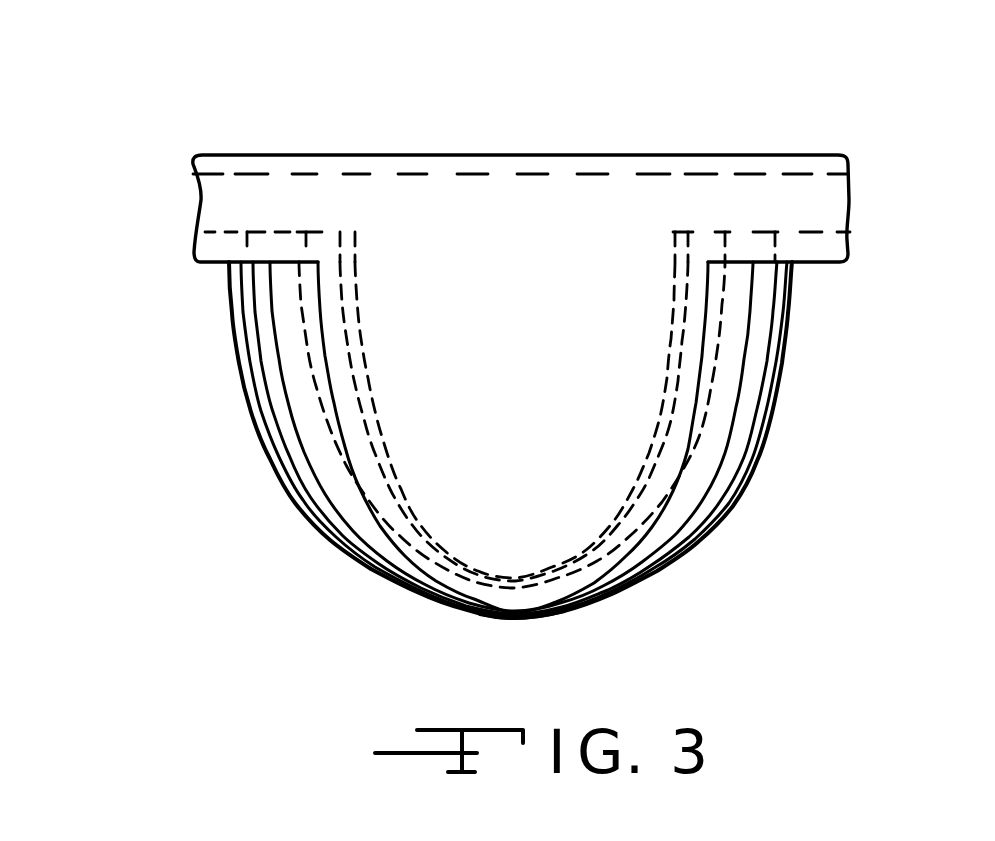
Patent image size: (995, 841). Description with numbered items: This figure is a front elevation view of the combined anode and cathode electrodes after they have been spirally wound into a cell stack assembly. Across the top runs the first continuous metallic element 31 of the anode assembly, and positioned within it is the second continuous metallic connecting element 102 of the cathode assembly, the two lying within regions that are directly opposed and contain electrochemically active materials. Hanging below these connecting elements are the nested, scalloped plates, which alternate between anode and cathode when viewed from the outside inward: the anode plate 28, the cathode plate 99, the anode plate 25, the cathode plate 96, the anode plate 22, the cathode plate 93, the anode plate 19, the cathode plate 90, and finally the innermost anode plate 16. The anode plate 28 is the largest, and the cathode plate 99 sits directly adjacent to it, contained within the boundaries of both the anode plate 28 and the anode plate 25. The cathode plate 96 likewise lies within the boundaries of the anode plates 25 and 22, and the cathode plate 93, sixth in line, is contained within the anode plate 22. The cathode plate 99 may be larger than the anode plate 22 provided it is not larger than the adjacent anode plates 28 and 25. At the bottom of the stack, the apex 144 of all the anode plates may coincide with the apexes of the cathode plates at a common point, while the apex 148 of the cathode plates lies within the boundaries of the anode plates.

The first continuous metallic element 31 is at (200, 155).
The second continuous metallic connecting element 102 is at (214, 172).
The cathode plate 96 is at (300, 275).
The cathode plate 93 is at (338, 292).
The anode plate 28 is at (230, 320).
The cathode plate 99 is at (268, 340).
The anode plate 25 is at (242, 388).
The anode plate 22 is at (282, 428).
The anode plate 19 is at (313, 447).
The cathode plate 90 is at (390, 460).
The anode plate 16 is at (500, 577).
The apex of the cathode plates 148 is at (503, 600).
The apex of the anode plates 144 is at (537, 623).